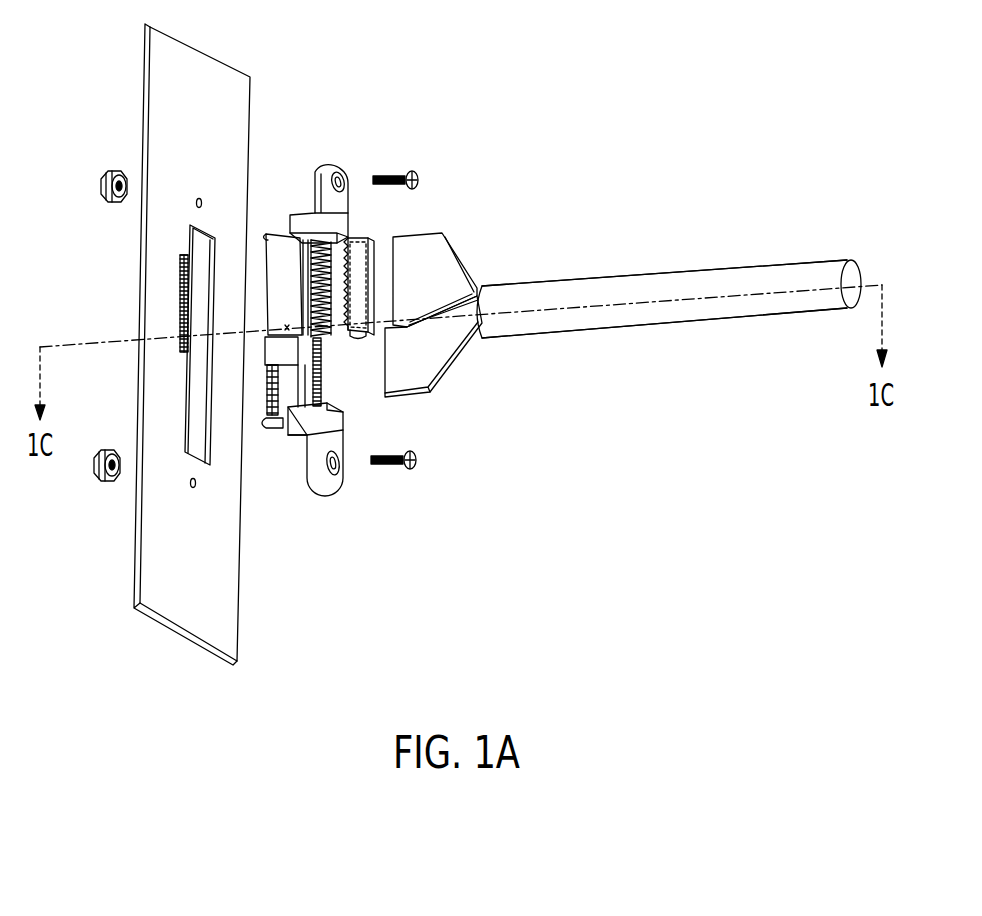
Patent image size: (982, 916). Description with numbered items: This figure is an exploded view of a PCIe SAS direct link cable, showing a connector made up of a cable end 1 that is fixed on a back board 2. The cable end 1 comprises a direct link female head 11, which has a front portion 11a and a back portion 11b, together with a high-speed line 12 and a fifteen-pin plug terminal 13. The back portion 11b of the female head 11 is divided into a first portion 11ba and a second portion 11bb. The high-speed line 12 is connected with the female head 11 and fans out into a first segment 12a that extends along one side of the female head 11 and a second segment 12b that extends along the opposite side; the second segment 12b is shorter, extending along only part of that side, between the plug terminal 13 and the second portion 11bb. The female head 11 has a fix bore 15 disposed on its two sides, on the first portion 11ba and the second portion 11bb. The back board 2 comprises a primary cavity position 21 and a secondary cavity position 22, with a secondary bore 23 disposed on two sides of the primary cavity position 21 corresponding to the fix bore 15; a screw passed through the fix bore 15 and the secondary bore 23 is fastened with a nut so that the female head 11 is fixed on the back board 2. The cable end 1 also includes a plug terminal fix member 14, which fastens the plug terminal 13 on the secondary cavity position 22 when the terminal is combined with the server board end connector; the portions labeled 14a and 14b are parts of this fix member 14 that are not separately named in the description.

The cable end 1 is at (707, 268).
The back board 2 is at (188, 585).
The direct link female head 11 is at (283, 252).
The front portion 11a is at (283, 406).
The back portion 11b is at (318, 477).
The first portion 11ba is at (340, 225).
The second portion 11bb is at (336, 440).
The high-speed line 12 is at (601, 288).
The first segment 12a is at (442, 290).
The second segment 12b is at (420, 362).
The 15pin plug terminal 13 is at (320, 240).
The 15pin plug terminal fix member 14 is at (360, 267).
The plate surface 14a is at (362, 305).
The plate foot 14b is at (356, 340).
The fix bore 15 is at (341, 178).
The primary cavity position 21 is at (192, 389).
The secondary cavity position 22 is at (183, 300).
The secondary bore 23 is at (197, 198).